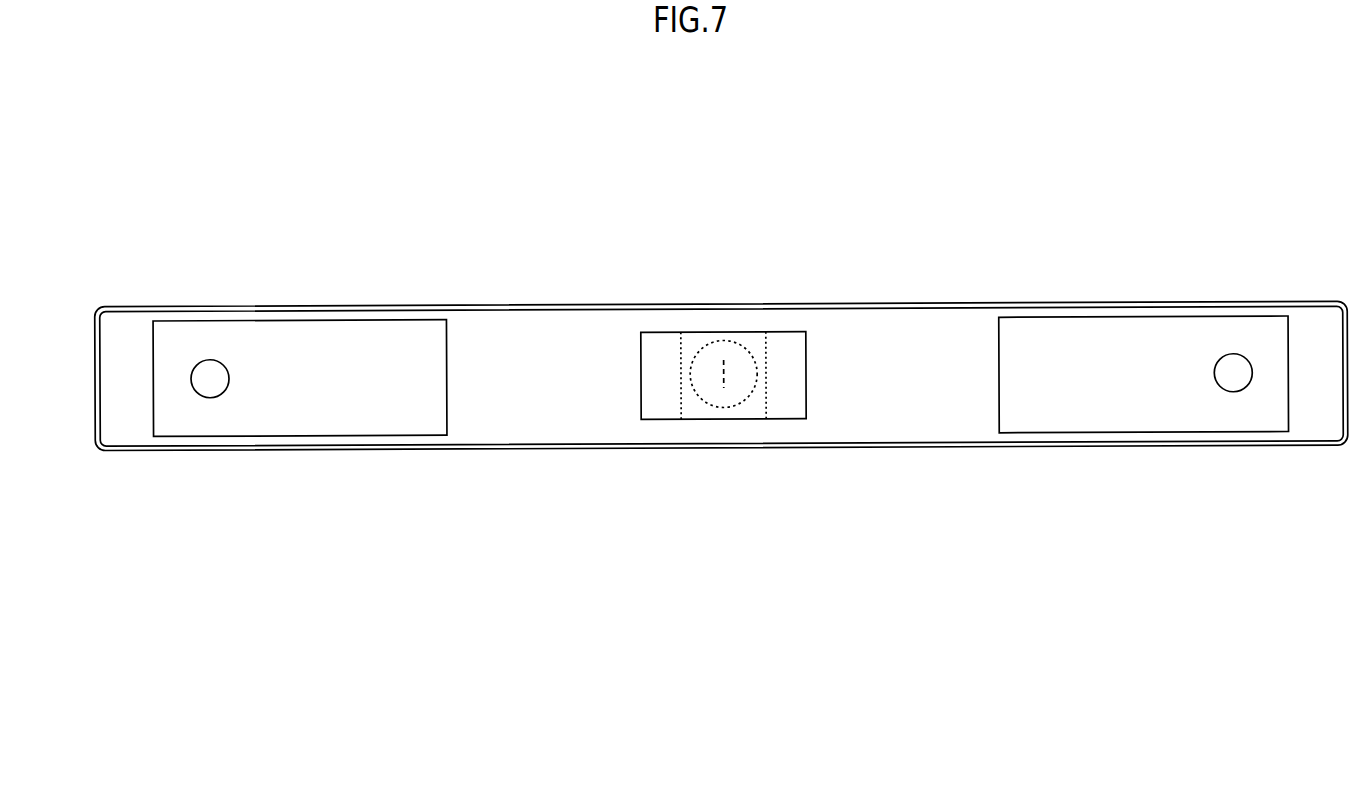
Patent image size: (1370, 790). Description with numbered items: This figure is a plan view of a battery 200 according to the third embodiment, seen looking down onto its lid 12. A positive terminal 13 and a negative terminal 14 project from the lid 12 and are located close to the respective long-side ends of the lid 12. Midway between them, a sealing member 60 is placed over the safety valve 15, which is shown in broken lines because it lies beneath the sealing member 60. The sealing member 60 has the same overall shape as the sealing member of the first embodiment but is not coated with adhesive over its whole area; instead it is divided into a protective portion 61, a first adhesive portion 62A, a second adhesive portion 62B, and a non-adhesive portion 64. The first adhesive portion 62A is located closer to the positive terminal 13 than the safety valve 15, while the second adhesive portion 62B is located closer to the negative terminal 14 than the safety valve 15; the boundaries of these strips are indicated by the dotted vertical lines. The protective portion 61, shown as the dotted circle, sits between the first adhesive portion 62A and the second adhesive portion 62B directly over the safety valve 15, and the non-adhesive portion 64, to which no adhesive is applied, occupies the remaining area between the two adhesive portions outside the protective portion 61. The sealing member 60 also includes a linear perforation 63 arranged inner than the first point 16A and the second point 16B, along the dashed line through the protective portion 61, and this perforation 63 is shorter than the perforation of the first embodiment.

The battery 200 is at (734, 197).
The lid 12 is at (926, 329).
The positive terminal 13 is at (1236, 335).
The negative terminal 14 is at (211, 341).
The safety valve 15 is at (743, 388).
The first point 16A is at (724, 340).
The second point 16B is at (724, 408).
The sealing member 60 is at (654, 322).
The protective portion 61 is at (742, 370).
The first adhesive portion 62A is at (790, 357).
The second adhesive portion 62B is at (651, 348).
The perforation 63 is at (721, 374).
The non-adhesive portion 64 is at (690, 407).